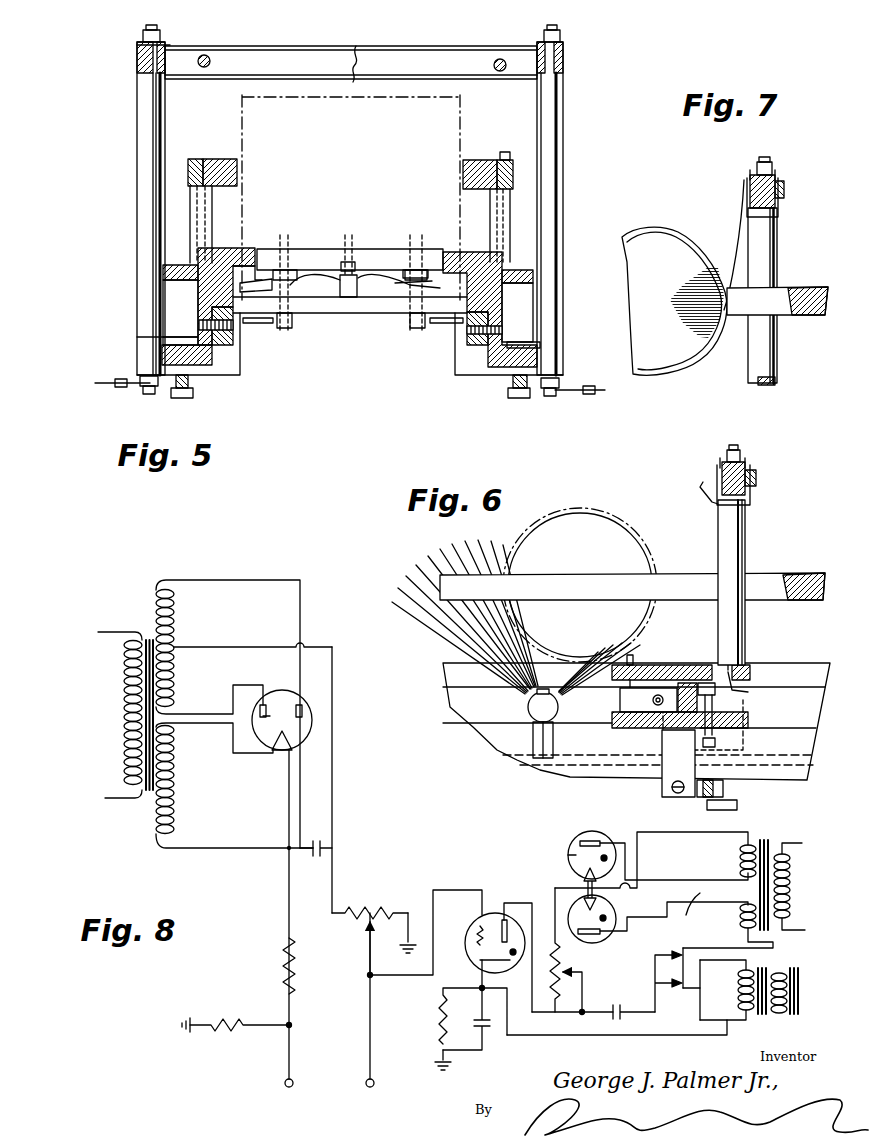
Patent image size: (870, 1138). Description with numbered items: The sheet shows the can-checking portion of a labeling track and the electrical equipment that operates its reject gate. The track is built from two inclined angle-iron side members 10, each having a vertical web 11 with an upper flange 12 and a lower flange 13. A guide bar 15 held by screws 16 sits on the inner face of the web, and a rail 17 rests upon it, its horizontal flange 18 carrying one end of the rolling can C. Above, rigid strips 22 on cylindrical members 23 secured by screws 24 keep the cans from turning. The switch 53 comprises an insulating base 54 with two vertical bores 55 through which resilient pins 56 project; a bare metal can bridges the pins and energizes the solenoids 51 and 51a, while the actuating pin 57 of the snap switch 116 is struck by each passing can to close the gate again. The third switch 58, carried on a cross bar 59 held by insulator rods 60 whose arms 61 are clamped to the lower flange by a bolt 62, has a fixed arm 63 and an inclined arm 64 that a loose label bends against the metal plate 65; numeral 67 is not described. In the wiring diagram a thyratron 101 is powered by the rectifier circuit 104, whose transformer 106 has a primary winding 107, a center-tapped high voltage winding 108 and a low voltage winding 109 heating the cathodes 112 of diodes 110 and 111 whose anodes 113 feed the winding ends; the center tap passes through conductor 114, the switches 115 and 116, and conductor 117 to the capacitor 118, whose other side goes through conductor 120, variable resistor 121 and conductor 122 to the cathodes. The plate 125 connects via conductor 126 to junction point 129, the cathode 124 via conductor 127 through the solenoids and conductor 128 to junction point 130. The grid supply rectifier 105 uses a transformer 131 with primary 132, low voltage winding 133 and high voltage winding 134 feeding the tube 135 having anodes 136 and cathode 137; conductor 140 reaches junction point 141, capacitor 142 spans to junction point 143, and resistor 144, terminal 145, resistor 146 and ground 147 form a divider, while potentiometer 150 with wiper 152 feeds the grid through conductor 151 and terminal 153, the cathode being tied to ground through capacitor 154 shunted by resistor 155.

In FIG. 5, the side members 10 is at (196, 292).
In FIG. 6, the side members 10 is at (806, 780).
In FIG. 5, the web 11 is at (200, 312).
In FIG. 5, the upper flange 12 is at (175, 265).
In FIG. 5, the lower flange 13 is at (506, 366).
In FIG. 5, the guide bar 15 is at (235, 345).
In FIG. 6, the guide bar 15 is at (730, 728).
In FIG. 5, the screws 16 is at (234, 328).
In FIG. 5, the rail 17 is at (236, 245).
In FIG. 6, the rail 17 is at (806, 668).
In FIG. 5, the horizontal inwardly extending flange 18 is at (256, 250).
In FIG. 5, the rigid strips 22 is at (230, 157).
In FIG. 7, the rigid strips 22 is at (792, 293).
In FIG. 6, the rigid strips 22 is at (790, 586).
In FIG. 5, the cylindrical members 23 is at (213, 202).
In FIG. 5, the screw 24 is at (200, 157).
In FIG. 8, the solenoid 51 is at (738, 992).
In FIG. 8, the solenoid 51a is at (784, 1013).
In FIG. 5, the switch 53 is at (270, 284).
In FIG. 6, the switch 53 is at (745, 692).
In FIG. 5, the rectangular base 54 is at (325, 250).
In FIG. 6, the rectangular base 54 is at (680, 666).
In FIG. 6, the vertical bores 55 is at (755, 666).
In FIG. 5, the pins 56 is at (285, 255).
In FIG. 6, the pins 56 is at (738, 660).
In FIG. 5, the actuating pin 57 is at (350, 250).
In FIG. 6, the actuating pin 57 is at (652, 660).
In FIG. 5, the third switch 58 is at (545, 36).
In FIG. 7, the third switch 58 is at (785, 162).
In FIG. 6, the third switch 58 is at (758, 463).
In FIG. 5, the cross bar 59 is at (500, 50).
In FIG. 7, the cross bar 59 is at (782, 192).
In FIG. 6, the cross bar 59 is at (746, 470).
In FIG. 5, the insulator rod 60 is at (160, 122).
In FIG. 7, the insulator rod 60 is at (778, 252).
In FIG. 6, the insulator rod 60 is at (748, 545).
In FIG. 5, the arms 61 is at (165, 355).
In FIG. 6, the arms 61 is at (740, 785).
In FIG. 5, the thumb screw or machine bolt 62 is at (186, 393).
In FIG. 7, the vertical arm 63 is at (757, 219).
In FIG. 6, the vertical arm 63 is at (752, 497).
In FIG. 5, the inclined vertical arm 64 is at (356, 46).
In FIG. 7, the inclined vertical arm 64 is at (744, 186).
In FIG. 6, the inclined vertical arm 64 is at (714, 504).
In FIG. 5, the metal plate 65 is at (420, 48).
In FIG. 7, the metal plate 65 is at (753, 176).
In FIG. 6, the metal plate 65 is at (721, 484).
In FIG. 6, the photocell ball 67 is at (528, 712).
In FIG. 5, the can C is at (462, 118).
In FIG. 6, the can C is at (652, 546).
In FIG. 8, the thyratron 101 is at (466, 928).
In FIG. 8, the rectifier circuit 104 is at (574, 840).
In FIG. 8, the second rectifier circuit 105 is at (315, 722).
In FIG. 8, the power transformer 106 is at (778, 838).
In FIG. 8, the primary winding 107 is at (807, 886).
In FIG. 8, the high voltage center-tapped winding 108 is at (740, 928).
In FIG. 8, the low voltage secondary winding 109 is at (740, 852).
In FIG. 8, the electron discharge tube 110 is at (570, 856).
In FIG. 8, the electron discharge tube 111 is at (618, 918).
In FIG. 8, the cathode 112 is at (572, 876).
In FIG. 8, the anode 113 is at (598, 842).
In FIG. 5, the conductor 114 is at (300, 289).
In FIG. 8, the conductor 114 is at (690, 893).
In FIG. 8, the switch 115 is at (773, 948).
In FIG. 5, the snap switch 116 is at (350, 297).
In FIG. 6, the snap switch 116 is at (624, 702).
In FIG. 8, the snap switch 116 is at (679, 962).
In FIG. 5, the conductor 117 is at (400, 305).
In FIG. 8, the conductor 117 is at (655, 1014).
In FIG. 8, the capacitor 118 is at (613, 1016).
In FIG. 8, the conductor 120 is at (585, 980).
In FIG. 8, the variable resistor 121 is at (560, 955).
In FIG. 8, the conductor 122 is at (555, 885).
In FIG. 8, the cathode 124 is at (478, 965).
In FIG. 8, the plate 125 is at (505, 910).
In FIG. 8, the conductor 126 is at (478, 992).
In FIG. 8, the conductor 127 is at (655, 1036).
In FIG. 8, the conductor 128 is at (731, 990).
In FIG. 8, the junction point 129 is at (555, 1013).
In FIG. 8, the junction point 130 is at (698, 995).
In FIG. 8, the transformer 131 is at (148, 630).
In FIG. 8, the primary winding 132 is at (125, 680).
In FIG. 8, the low voltage secondary winding 133 is at (176, 797).
In FIG. 8, the center tapped high voltage secondary winding 134 is at (176, 634).
In FIG. 8, the electron discharge tube 135 is at (277, 690).
In FIG. 8, the anodes 136 is at (266, 708).
In FIG. 8, the cathode 137 is at (277, 738).
In FIG. 8, the conductor 140 is at (335, 662).
In FIG. 8, the junction point 141 is at (324, 853).
In FIG. 8, the capacitor 142 is at (320, 840).
In FIG. 8, the junction point 143 is at (288, 855).
In FIG. 8, the resistor 144 is at (285, 962).
In FIG. 5, the terminal 145 is at (590, 392).
In FIG. 8, the terminal 145 is at (285, 1083).
In FIG. 8, the resistor 146 is at (243, 1020).
In FIG. 8, the ground or common connection 147 is at (186, 1032).
In FIG. 8, the potentiometer 150 is at (377, 910).
In FIG. 8, the conductor 151 is at (445, 890).
In FIG. 8, the wiper 152 is at (368, 940).
In FIG. 5, the terminal 153 is at (110, 380).
In FIG. 8, the terminal 153 is at (367, 1082).
In FIG. 8, the capacitor 154 is at (490, 1028).
In FIG. 8, the fixed resistor 155 is at (440, 1012).